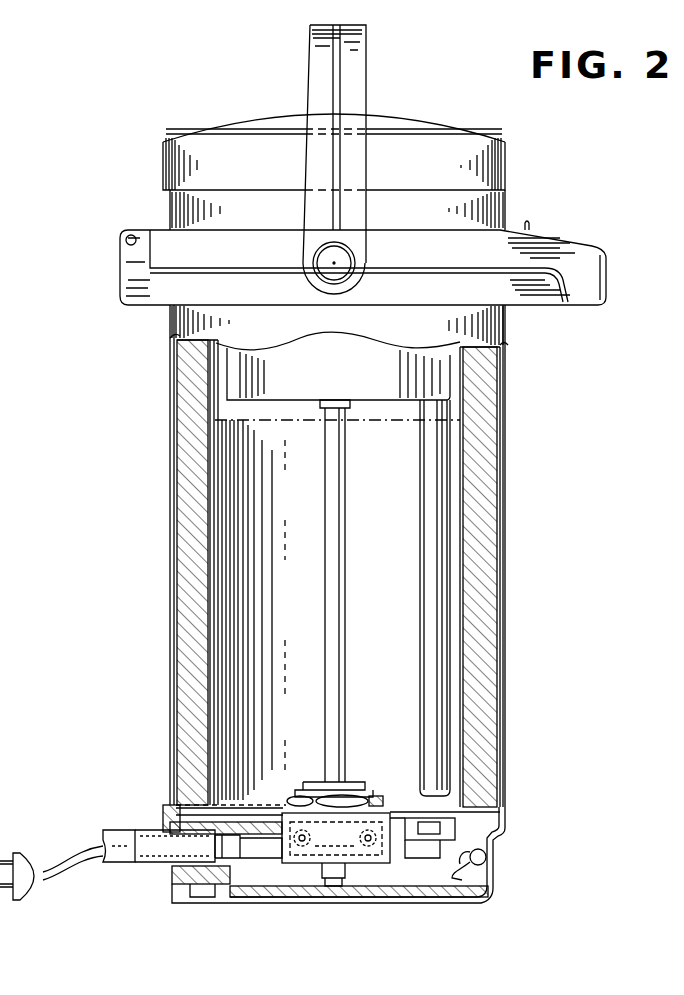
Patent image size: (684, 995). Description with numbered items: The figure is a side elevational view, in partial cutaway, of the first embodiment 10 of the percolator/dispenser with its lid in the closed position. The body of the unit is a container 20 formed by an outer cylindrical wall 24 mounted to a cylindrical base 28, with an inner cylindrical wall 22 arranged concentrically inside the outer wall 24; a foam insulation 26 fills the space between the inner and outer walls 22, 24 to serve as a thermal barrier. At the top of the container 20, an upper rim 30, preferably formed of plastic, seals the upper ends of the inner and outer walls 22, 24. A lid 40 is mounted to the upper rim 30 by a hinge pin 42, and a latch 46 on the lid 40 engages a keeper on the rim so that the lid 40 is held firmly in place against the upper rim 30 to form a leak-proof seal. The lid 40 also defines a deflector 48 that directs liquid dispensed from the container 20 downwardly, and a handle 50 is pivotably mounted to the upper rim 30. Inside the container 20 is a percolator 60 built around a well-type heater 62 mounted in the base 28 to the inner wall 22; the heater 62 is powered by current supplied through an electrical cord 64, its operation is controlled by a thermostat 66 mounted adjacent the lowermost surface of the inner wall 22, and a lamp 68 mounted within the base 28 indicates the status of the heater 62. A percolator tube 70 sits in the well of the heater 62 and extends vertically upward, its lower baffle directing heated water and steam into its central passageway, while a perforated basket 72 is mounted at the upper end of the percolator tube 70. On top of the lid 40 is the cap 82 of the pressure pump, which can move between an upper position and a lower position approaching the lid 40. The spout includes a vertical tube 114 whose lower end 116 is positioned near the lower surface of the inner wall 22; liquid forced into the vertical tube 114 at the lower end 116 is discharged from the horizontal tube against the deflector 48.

The first embodiment 10 is at (526, 625).
The container 20 is at (167, 604).
The inner cylindrical wall 22 is at (210, 497).
The outer cylindrical wall 24 is at (209, 432).
The foam insulation 26 is at (190, 668).
The cylindrical base 28 is at (172, 882).
The upper rim 30 is at (452, 288).
The lid 40 is at (560, 241).
The hinge pin 42 is at (131, 235).
The latch 46 is at (528, 222).
The deflector 48 is at (606, 268).
The handle 50 is at (310, 73).
The percolator 60 is at (355, 700).
The well-type heater 62 is at (286, 813).
The electrical cord 64 is at (58, 860).
The thermostat 66 is at (456, 830).
The lamp 68 is at (487, 858).
The percolator tube 70 is at (341, 607).
The perforated basket 72 is at (390, 397).
The cap 82 is at (408, 126).
The vertical tube 114 is at (438, 532).
The lower end 116 is at (448, 796).